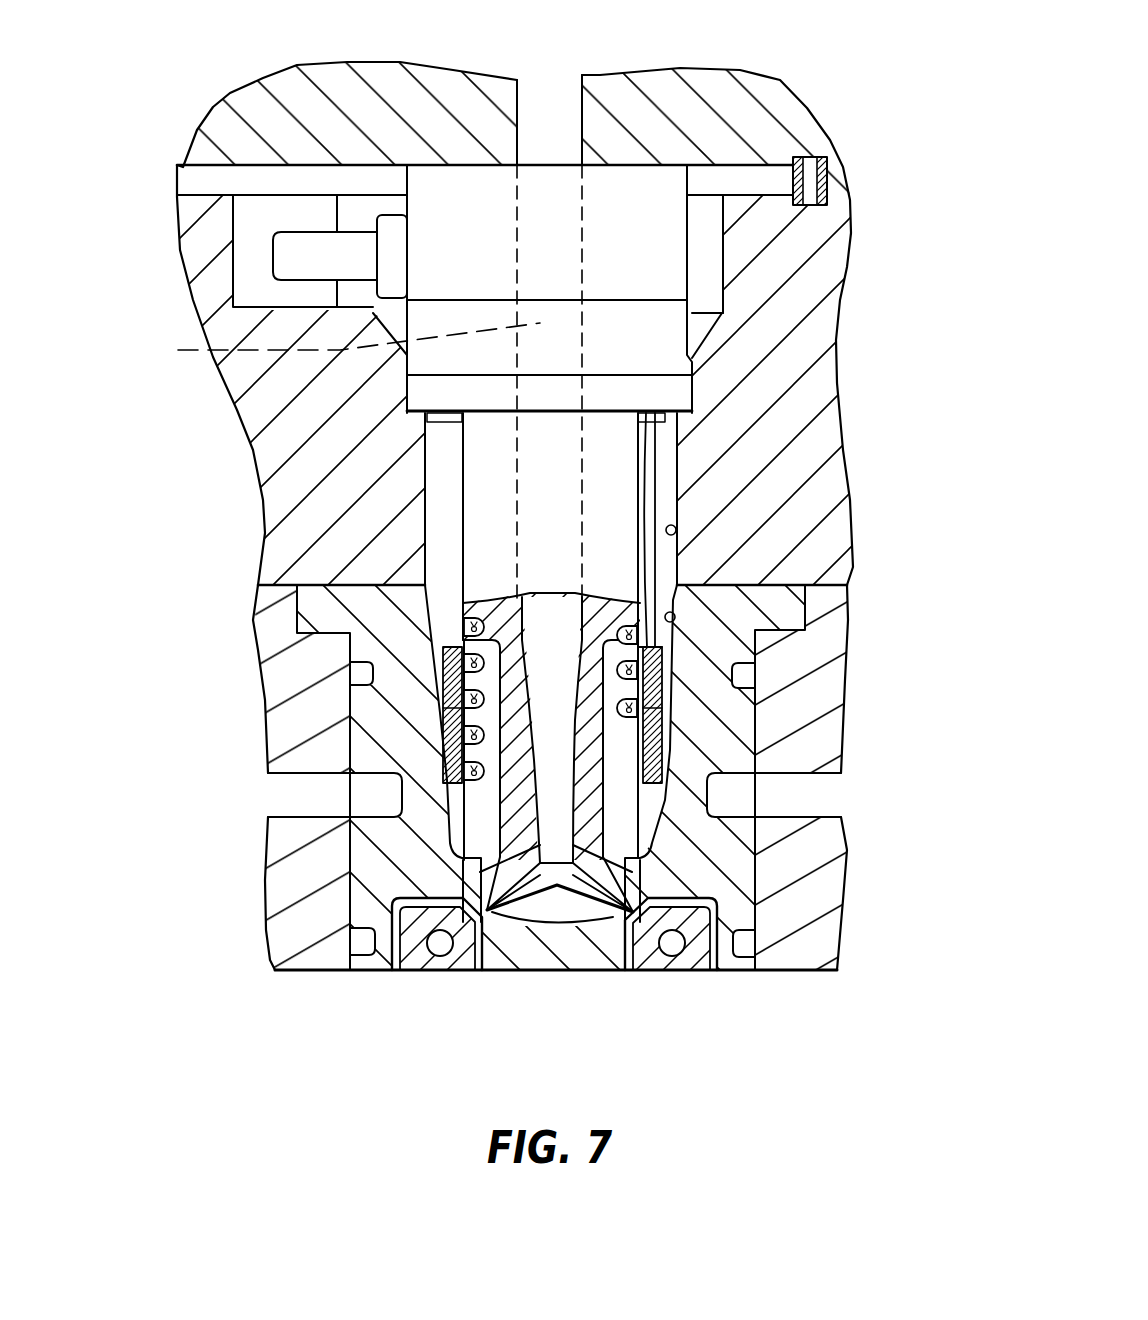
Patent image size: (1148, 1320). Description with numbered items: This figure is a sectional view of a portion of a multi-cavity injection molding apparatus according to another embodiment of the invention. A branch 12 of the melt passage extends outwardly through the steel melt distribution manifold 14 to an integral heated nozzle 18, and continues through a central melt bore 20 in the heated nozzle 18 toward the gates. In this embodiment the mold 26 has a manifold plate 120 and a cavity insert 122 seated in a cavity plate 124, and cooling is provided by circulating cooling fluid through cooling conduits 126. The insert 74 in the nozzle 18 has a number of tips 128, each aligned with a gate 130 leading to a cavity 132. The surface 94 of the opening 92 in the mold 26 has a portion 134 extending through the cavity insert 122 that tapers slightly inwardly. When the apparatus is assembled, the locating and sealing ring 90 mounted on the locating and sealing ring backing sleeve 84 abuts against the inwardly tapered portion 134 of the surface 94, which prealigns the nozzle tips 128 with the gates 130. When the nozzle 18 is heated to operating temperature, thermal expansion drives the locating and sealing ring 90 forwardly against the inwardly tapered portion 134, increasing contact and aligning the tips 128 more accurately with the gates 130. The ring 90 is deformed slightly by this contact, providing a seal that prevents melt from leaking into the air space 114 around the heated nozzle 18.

The branch 12 is at (548, 100).
The melt distribution manifold 14 is at (778, 110).
The heated nozzle 18 is at (643, 187).
The central melt bore 20 is at (334, 344).
The mold 26 is at (827, 261).
The insert 74 is at (588, 738).
The locating and sealing ring backing sleeve 84 is at (455, 748).
The locating and sealing ring 90 is at (452, 701).
The opening 92 is at (665, 483).
The surface 94 is at (676, 530).
The air space 114 is at (437, 511).
The manifold plate 120 is at (822, 336).
The cavity insert 122 is at (735, 707).
The cavity plate 124 is at (835, 848).
The cooling conduit 126 is at (287, 800).
The tip 128 is at (481, 903).
The gate 130 is at (477, 895).
The cavity 132 is at (393, 968).
The inwardly tapered portion 134 is at (680, 625).